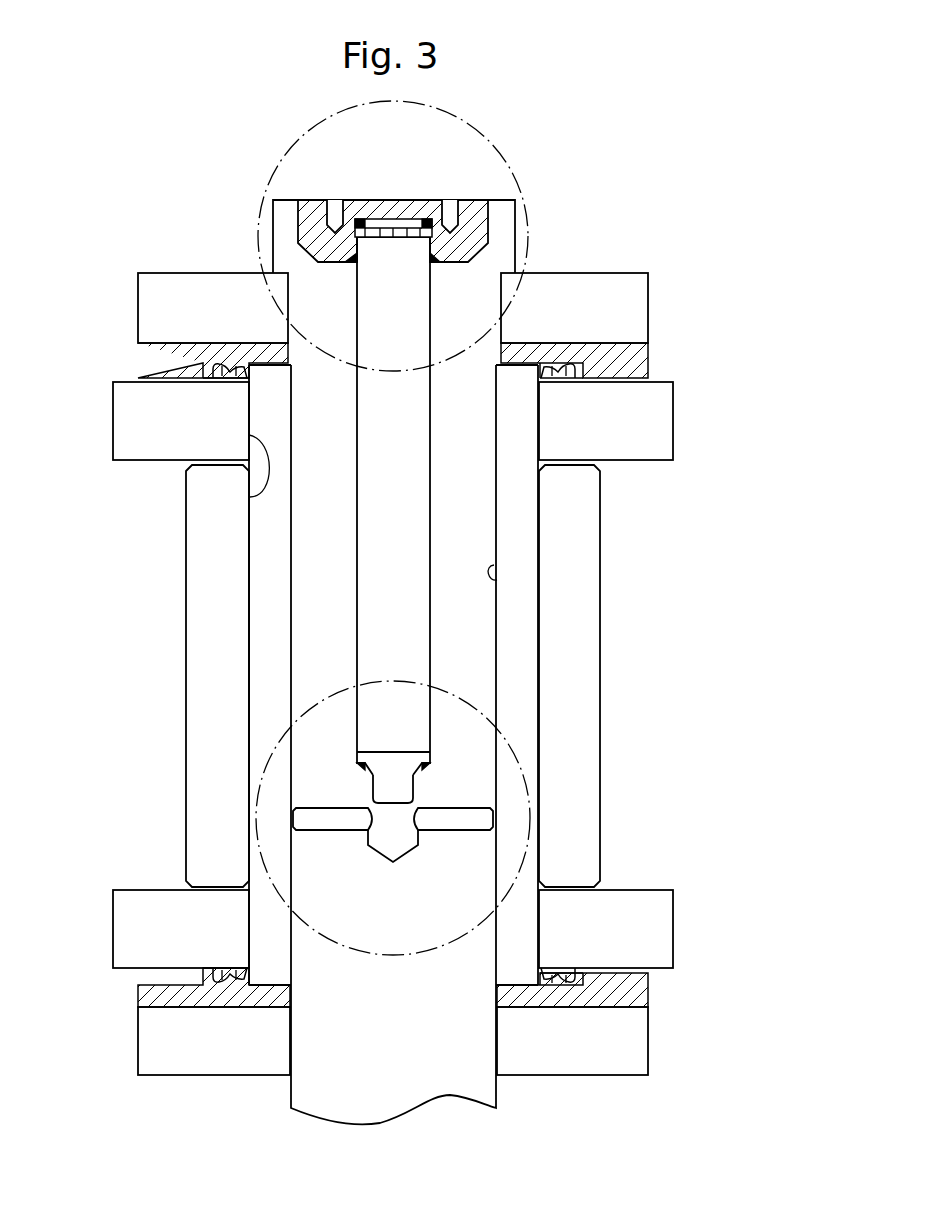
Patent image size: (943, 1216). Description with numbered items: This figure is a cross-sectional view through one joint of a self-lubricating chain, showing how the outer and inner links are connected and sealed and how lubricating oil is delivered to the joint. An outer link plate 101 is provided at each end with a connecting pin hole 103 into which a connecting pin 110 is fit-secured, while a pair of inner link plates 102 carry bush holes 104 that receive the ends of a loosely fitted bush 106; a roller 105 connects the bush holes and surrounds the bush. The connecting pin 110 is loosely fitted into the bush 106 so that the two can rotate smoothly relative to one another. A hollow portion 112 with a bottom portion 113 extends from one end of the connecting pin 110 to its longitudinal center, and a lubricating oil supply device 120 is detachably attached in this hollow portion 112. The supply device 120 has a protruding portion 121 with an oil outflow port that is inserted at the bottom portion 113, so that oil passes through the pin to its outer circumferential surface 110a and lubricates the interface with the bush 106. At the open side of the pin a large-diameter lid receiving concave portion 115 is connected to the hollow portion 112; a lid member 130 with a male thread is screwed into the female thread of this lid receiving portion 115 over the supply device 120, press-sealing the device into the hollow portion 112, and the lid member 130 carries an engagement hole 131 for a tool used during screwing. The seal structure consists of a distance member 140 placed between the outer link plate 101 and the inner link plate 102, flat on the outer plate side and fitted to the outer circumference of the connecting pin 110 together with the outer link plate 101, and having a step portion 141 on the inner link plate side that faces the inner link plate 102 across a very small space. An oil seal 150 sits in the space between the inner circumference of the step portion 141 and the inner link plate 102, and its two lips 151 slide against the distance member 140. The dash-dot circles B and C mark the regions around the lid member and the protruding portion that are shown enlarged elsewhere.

The outer link plate 101 is at (177, 288).
The inner link plate 102 is at (133, 418).
The connecting pin hole 103 is at (288, 298).
The bush hole 104 is at (250, 497).
The roller 105 is at (195, 635).
The bush 106 is at (270, 672).
The connecting pin 110 is at (450, 1023).
The outer circumferential surface 110a is at (540, 615).
The hollow portion 112 is at (497, 580).
The bottom portion 113 is at (418, 763).
The lid receiving concave portion 115 is at (457, 253).
The lubricating oil supply device 120 is at (380, 250).
The protruding portion 121 is at (400, 790).
The lid member 130 is at (410, 208).
The engagement hole 131 is at (450, 208).
The distance member 140 is at (615, 352).
The step portion 141 is at (577, 377).
The oil seal 150 is at (552, 377).
The lip 151 is at (550, 363).
The detail region B is at (508, 160).
The detail region C is at (353, 957).